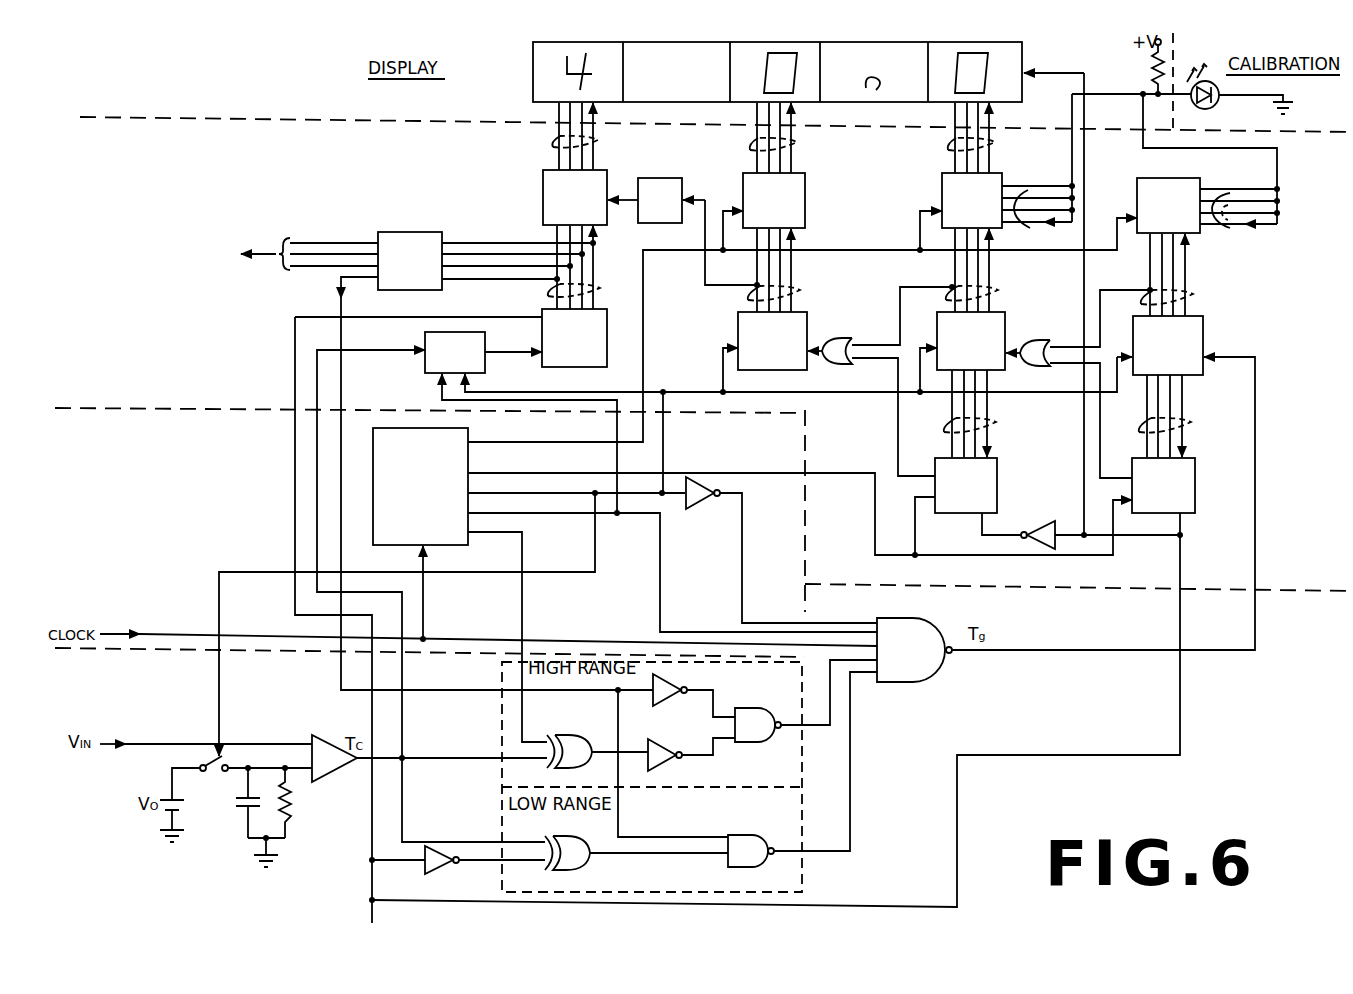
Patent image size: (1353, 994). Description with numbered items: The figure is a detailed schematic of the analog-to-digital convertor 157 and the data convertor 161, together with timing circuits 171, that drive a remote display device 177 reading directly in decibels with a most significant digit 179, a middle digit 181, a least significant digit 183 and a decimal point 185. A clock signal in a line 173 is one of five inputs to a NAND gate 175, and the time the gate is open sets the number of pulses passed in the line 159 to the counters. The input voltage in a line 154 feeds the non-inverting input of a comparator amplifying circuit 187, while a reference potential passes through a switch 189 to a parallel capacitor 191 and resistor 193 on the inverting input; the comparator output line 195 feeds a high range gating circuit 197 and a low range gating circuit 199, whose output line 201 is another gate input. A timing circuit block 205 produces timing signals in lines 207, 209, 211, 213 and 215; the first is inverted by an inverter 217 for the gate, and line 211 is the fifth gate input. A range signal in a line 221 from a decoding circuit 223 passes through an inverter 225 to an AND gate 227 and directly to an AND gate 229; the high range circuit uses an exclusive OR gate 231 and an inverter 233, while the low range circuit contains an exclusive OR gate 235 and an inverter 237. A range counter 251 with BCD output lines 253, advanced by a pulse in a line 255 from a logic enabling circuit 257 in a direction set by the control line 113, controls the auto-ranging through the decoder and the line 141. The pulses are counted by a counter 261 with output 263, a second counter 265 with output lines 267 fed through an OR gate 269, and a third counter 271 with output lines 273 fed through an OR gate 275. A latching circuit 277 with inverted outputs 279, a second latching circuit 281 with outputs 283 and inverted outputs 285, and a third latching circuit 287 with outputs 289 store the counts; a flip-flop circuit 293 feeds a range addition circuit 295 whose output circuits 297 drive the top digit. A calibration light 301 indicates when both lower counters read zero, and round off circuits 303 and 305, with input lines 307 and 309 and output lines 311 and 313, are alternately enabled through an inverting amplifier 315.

The control signal line 113 is at (364, 914).
The range control line 141 is at (268, 250).
The input line 154 is at (154, 744).
The analog-to-digital convertor 157 is at (298, 910).
The output line of NAND gate 159 is at (1258, 540).
The data convertor 161 is at (180, 216).
The timing circuits 171 is at (150, 500).
The clock signal line 173 is at (182, 634).
The NAND gate 175 is at (912, 682).
The display device 177 is at (533, 93).
The most significant digit 179 is at (535, 50).
The middle digit 181 is at (820, 58).
The least significant digit 183 is at (1023, 62).
The decimal point 185 is at (893, 74).
The comparator amplifying circuit 187 is at (346, 728).
The switch 189 is at (220, 776).
The capacitor 191 is at (246, 808).
The resistor 193 is at (292, 806).
The comparator output line 195 is at (386, 756).
The high range gating circuit 197 is at (804, 785).
The low range gating circuit 199 is at (803, 884).
The high range output line 201 is at (810, 730).
The timing circuit block 205 is at (388, 540).
The T_0 timing signal line 207 is at (568, 492).
The T_10 timing signal line 209 is at (528, 548).
The T_12 timing signal line 211 is at (550, 516).
The round off timing line 213 is at (570, 473).
The store timing line 215 is at (558, 446).
The inverter 217 is at (692, 512).
The range indication line 221 is at (341, 672).
The decoding circuit 223 is at (428, 232).
The inverter 225 is at (680, 678).
The AND gate 227 is at (806, 717).
The AND gate 229 is at (740, 835).
The exclusive OR gate 231 is at (568, 736).
The inverter 233 is at (668, 768).
The exclusive OR gate 235 is at (576, 868).
The inverter 237 is at (438, 874).
The range counter 251 is at (542, 312).
The range counter output lines 253 is at (593, 267).
The range counter advance line 255 is at (494, 352).
The logic enabling circuit 257 is at (424, 332).
The counter 261 is at (1192, 304).
The counter output 263 is at (1203, 322).
The second counter 265 is at (1005, 318).
The second counter output lines 267 is at (994, 270).
The OR gate 269 is at (1079, 382).
The third counter 271 is at (807, 314).
The third counter output lines 273 is at (796, 270).
The OR gate 275 is at (881, 380).
The latching circuit 277 is at (1178, 178).
The inverted output lines 279 is at (1214, 192).
The second latching circuit 281 is at (942, 186).
The latch output lines 283 is at (995, 142).
The inverted output lines 285 is at (1018, 190).
The third latching circuit 287 is at (805, 196).
The latch output lines 289 is at (797, 142).
The flip-flop circuit 293 is at (672, 178).
The range addition circuit 295 is at (543, 184).
The output circuits 297 is at (598, 140).
The calibration light 301 is at (1214, 105).
The round off circuit 303 is at (1195, 474).
The round off circuit 305 is at (997, 474).
The round off input lines 307 is at (1188, 416).
The round off input lines 309 is at (992, 413).
The round off output line 311 is at (1108, 474).
The round off output line 313 is at (906, 474).
The inverting amplifier 315 is at (1052, 514).